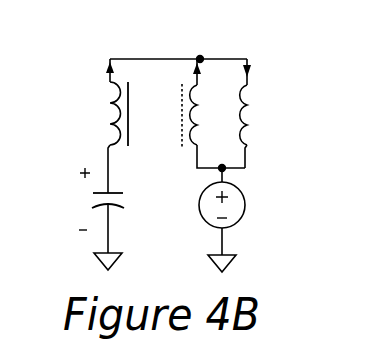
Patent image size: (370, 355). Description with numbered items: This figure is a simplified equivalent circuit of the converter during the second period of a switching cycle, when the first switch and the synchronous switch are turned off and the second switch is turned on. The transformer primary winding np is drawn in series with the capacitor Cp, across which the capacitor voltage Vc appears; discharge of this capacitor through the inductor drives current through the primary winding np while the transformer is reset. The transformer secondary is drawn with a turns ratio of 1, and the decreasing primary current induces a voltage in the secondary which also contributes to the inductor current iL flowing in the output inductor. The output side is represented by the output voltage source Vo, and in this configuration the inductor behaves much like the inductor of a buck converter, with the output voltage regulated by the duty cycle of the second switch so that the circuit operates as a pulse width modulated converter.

The primary winding np is at (120, 137).
The secondary winding (unity turns) 1 is at (213, 124).
The load inductor current iL is at (258, 126).
The parallel capacitor Cp is at (117, 231).
The capacitor voltage Vc is at (73, 199).
The output voltage source Vo is at (237, 219).